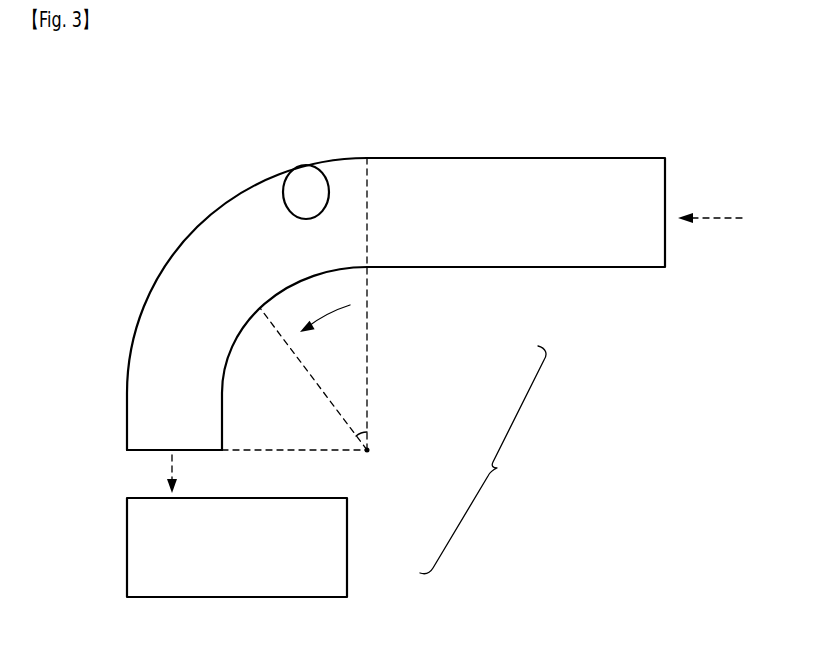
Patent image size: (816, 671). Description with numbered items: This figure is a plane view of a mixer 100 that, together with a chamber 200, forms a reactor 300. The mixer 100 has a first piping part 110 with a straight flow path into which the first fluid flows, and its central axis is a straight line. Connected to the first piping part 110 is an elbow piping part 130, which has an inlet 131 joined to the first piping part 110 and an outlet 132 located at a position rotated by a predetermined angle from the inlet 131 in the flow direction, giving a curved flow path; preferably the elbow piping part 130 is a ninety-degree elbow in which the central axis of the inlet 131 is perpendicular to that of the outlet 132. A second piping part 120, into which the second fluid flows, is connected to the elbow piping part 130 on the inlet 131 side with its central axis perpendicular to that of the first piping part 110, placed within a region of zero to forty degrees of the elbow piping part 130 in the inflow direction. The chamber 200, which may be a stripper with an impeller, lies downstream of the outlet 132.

The mixer 100 is at (347, 270).
The first piping part 110 is at (583, 158).
The second piping part 120 is at (283, 193).
The elbow piping part 130 is at (120, 291).
The inlet 131 is at (368, 198).
The outlet 132 is at (148, 451).
The chamber 200 is at (348, 552).
The reactor 300 is at (483, 460).